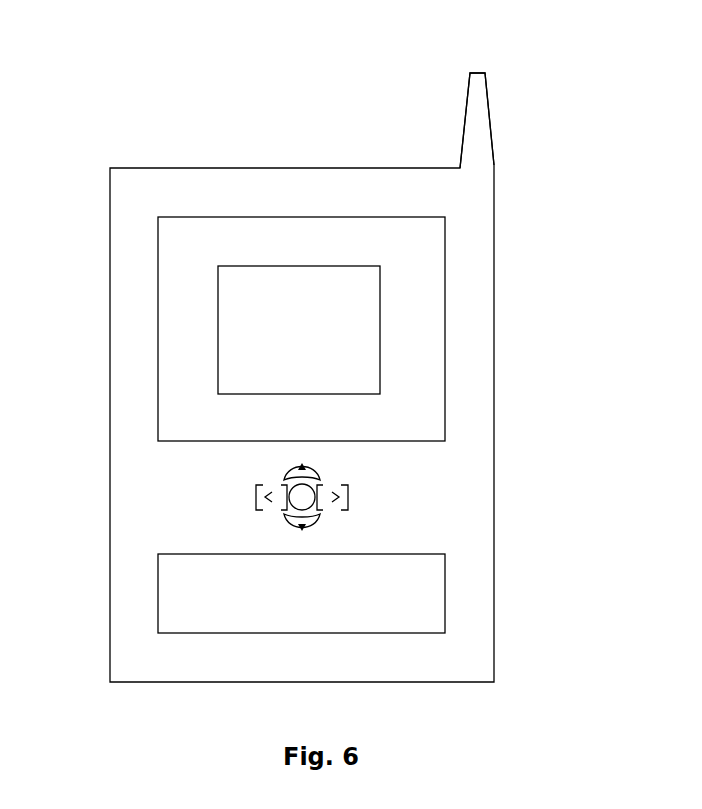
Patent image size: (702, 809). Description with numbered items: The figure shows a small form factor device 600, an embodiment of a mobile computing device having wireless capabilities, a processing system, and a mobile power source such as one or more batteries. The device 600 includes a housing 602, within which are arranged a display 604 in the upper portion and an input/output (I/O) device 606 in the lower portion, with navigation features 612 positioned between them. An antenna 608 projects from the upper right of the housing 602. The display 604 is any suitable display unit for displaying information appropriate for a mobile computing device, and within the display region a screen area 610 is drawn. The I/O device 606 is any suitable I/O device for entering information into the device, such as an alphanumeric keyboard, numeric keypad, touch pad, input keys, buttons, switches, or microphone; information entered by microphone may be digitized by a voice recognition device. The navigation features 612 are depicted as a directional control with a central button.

The small form factor device 600 is at (119, 79).
The housing 602 is at (494, 425).
The display 604 is at (445, 233).
The input/output (I/O) device 606 is at (445, 587).
The antenna 608 is at (467, 112).
The display screen 610 is at (380, 349).
The navigation features 612 is at (379, 489).